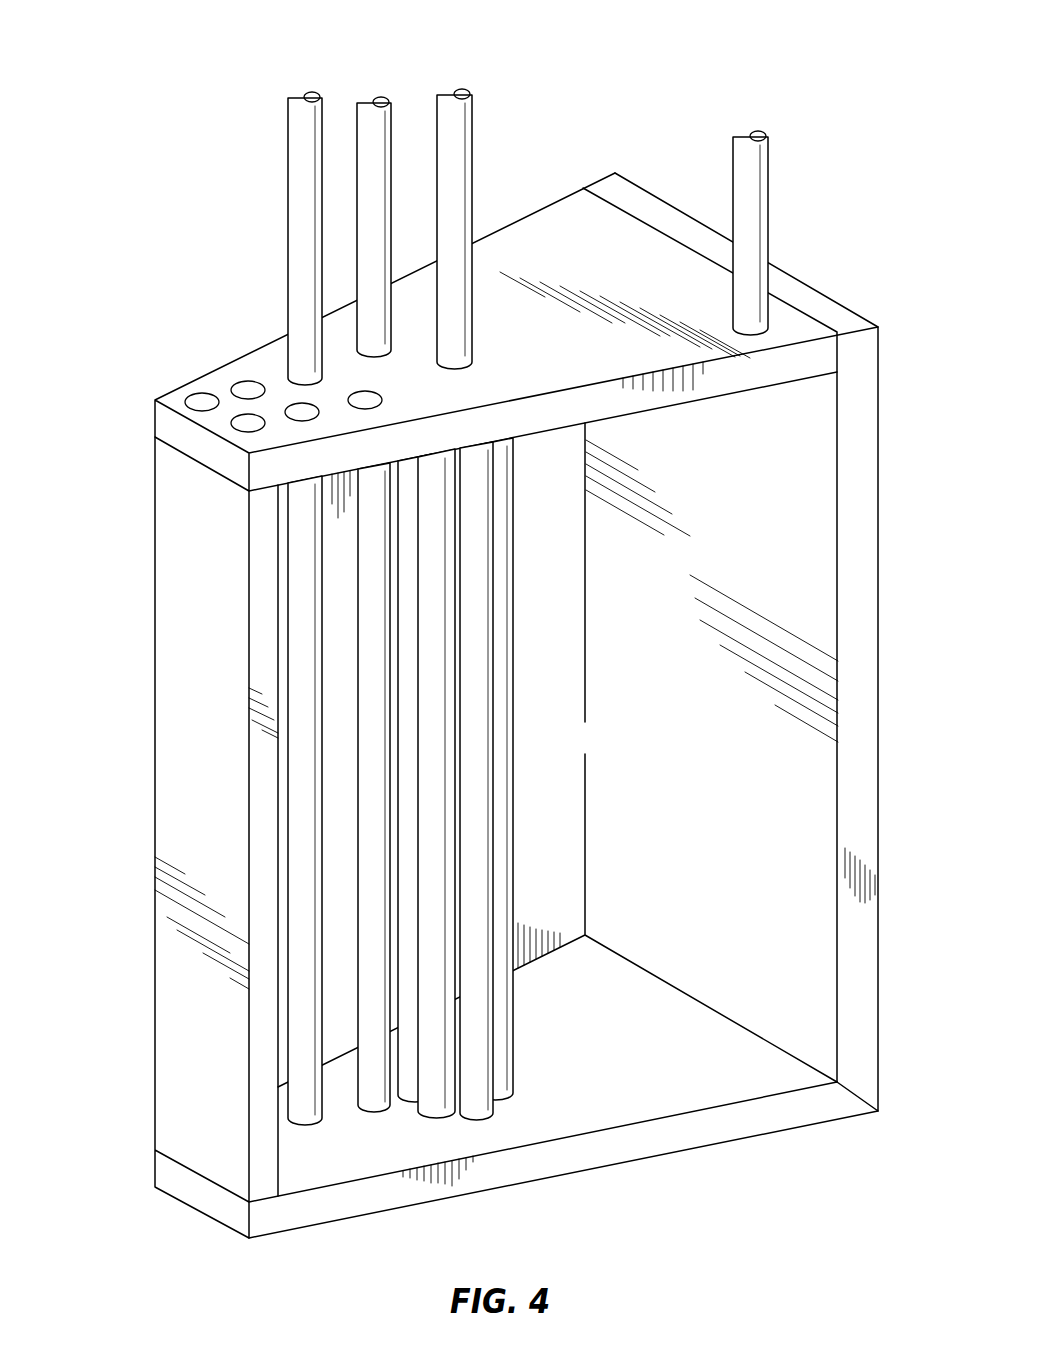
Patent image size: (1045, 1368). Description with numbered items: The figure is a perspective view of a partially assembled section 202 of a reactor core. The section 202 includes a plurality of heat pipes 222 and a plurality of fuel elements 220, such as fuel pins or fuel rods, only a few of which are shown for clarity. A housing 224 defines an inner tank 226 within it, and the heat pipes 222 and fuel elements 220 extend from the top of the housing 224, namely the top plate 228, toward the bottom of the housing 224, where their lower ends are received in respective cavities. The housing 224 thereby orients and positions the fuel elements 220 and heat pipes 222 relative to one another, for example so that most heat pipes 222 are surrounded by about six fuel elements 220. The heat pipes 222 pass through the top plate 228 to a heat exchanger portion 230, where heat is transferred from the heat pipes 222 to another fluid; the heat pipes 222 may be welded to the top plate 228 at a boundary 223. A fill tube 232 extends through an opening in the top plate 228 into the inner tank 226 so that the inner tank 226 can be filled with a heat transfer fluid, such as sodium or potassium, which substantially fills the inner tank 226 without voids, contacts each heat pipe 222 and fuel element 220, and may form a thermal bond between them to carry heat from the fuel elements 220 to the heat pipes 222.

The section 202 is at (170, 129).
The fuel elements 220 is at (373, 672).
The heat pipes 222 is at (303, 178).
The boundary 223 is at (473, 360).
The housing 224 is at (195, 988).
The inner tank 226 is at (607, 751).
The top plate 228 is at (183, 430).
The heat exchanger portion 230 is at (795, 0).
The fill tube 232 is at (727, 133).